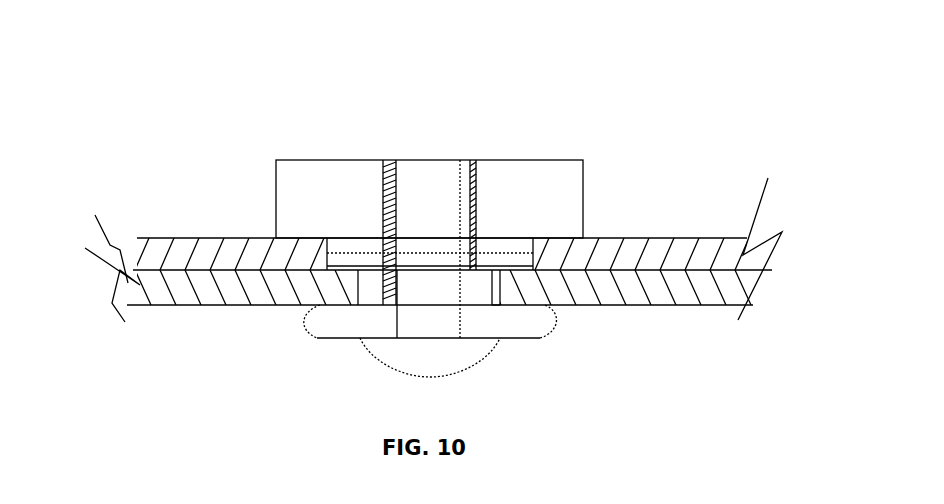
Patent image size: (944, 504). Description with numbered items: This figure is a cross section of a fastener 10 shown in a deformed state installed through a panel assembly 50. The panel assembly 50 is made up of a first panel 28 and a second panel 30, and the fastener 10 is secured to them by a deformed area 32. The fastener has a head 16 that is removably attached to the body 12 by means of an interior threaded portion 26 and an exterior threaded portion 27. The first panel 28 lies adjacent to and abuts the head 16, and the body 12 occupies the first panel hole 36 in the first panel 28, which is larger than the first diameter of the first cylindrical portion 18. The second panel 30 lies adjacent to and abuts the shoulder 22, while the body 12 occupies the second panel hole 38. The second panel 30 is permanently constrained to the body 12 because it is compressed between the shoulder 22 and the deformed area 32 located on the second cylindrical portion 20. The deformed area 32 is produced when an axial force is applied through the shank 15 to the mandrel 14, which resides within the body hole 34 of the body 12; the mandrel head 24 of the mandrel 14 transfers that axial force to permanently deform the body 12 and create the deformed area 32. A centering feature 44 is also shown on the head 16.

The fastener 10 is at (570, 95).
The body 12 is at (327, 265).
The mandrel 14 is at (376, 210).
The shank 15 is at (422, 177).
The head 16 is at (297, 177).
The first cylindrical portion 18 is at (530, 258).
The second cylindrical portion 20 is at (503, 280).
The shoulder 22 is at (518, 273).
The mandrel head 24 is at (417, 360).
The interior threaded portion 26 is at (588, 190).
The exterior threaded portion 27 is at (473, 183).
The first panel 28 is at (157, 253).
The second panel 30 is at (155, 293).
The deformed area 32 is at (508, 318).
The body hole 34 is at (397, 315).
The first panel hole 36 is at (323, 245).
The second panel hole 38 is at (502, 293).
The centering feature 44 is at (360, 247).
The panel assembly 50 is at (778, 208).